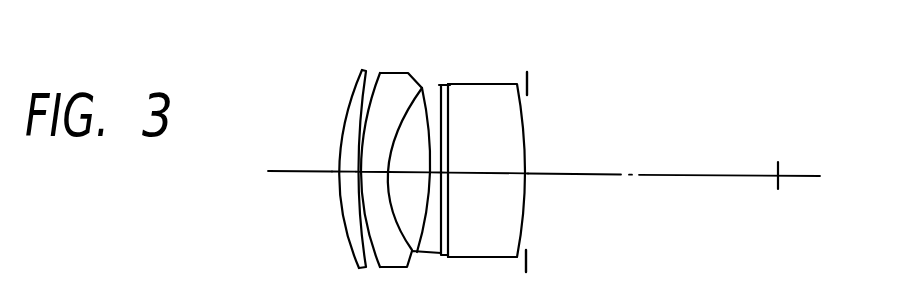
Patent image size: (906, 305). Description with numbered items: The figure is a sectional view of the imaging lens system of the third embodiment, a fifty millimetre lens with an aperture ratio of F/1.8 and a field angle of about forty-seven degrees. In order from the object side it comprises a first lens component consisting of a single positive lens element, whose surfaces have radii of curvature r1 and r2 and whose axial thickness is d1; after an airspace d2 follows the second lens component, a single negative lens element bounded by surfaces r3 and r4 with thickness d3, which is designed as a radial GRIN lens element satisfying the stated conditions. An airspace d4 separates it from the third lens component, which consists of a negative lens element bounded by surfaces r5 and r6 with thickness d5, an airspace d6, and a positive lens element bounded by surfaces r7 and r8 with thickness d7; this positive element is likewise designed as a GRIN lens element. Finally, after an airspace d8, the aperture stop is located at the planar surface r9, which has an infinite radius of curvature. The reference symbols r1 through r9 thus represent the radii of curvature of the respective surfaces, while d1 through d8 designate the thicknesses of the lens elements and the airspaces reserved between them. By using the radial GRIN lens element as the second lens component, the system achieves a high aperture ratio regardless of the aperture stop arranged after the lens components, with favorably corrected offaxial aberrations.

The radius of curvature of first surface r1 is at (343, 108).
The radius of curvature of second surface r2 is at (360, 103).
The radius of curvature of third surface r3 is at (374, 97).
The radius of curvature of fourth surface r4 is at (400, 112).
The radius of curvature of fifth surface r5 is at (424, 106).
The radius of curvature of sixth surface r6 is at (441, 112).
The radius of curvature of seventh surface r7 is at (449, 112).
The radius of curvature of eighth surface r8 is at (520, 117).
The aperture stop surface r9 is at (529, 82).
The thickness of first lens element d1 is at (343, 173).
The airspace between first and second lens components d2 is at (357, 173).
The thickness of second lens element d3 is at (374, 173).
The airspace between second and third lens components d4 is at (416, 173).
The thickness of negative lens element of third component d5 is at (434, 173).
The airspace within third lens component d6 is at (446, 173).
The thickness of positive GRIN lens element of third component d7 is at (491, 173).
The airspace between last lens element and aperture stop d8 is at (525, 175).